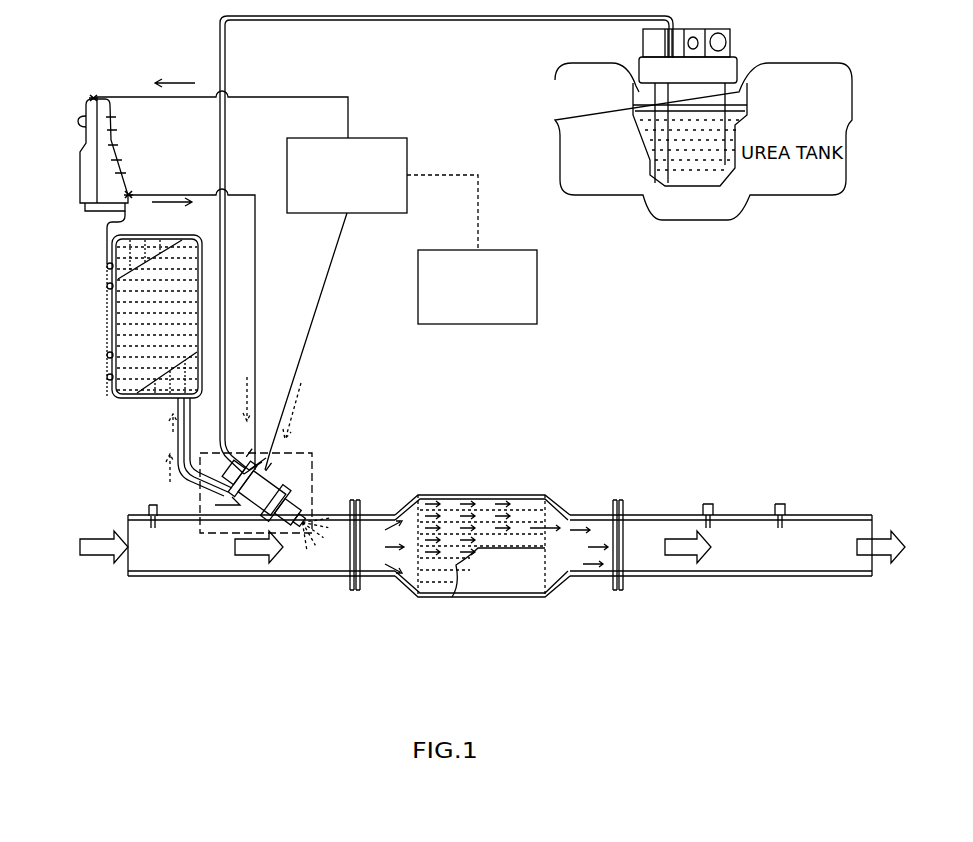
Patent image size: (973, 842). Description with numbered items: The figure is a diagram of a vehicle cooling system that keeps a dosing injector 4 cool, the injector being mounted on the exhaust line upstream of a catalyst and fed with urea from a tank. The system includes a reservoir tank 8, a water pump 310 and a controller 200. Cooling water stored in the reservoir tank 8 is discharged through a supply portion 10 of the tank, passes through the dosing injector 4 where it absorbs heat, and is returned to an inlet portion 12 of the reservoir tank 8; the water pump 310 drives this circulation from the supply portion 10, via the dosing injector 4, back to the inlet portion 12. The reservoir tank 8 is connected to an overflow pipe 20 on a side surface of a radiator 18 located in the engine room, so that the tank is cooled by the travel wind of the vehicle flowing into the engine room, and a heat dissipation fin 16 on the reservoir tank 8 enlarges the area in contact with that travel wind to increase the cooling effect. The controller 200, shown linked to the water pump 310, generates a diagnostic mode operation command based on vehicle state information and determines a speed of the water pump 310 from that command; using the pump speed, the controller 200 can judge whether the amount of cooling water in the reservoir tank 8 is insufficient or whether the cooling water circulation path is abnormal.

The dosing injector 4 is at (316, 447).
The reservoir tank 8 is at (78, 176).
The supply portion 10 is at (132, 192).
The inlet portion 12 is at (92, 95).
The heat dissipation fin 16 is at (110, 130).
The radiator 18 is at (128, 345).
The overflow pipe 20 is at (104, 246).
The controller 200 is at (537, 285).
The water pump 310 is at (407, 156).